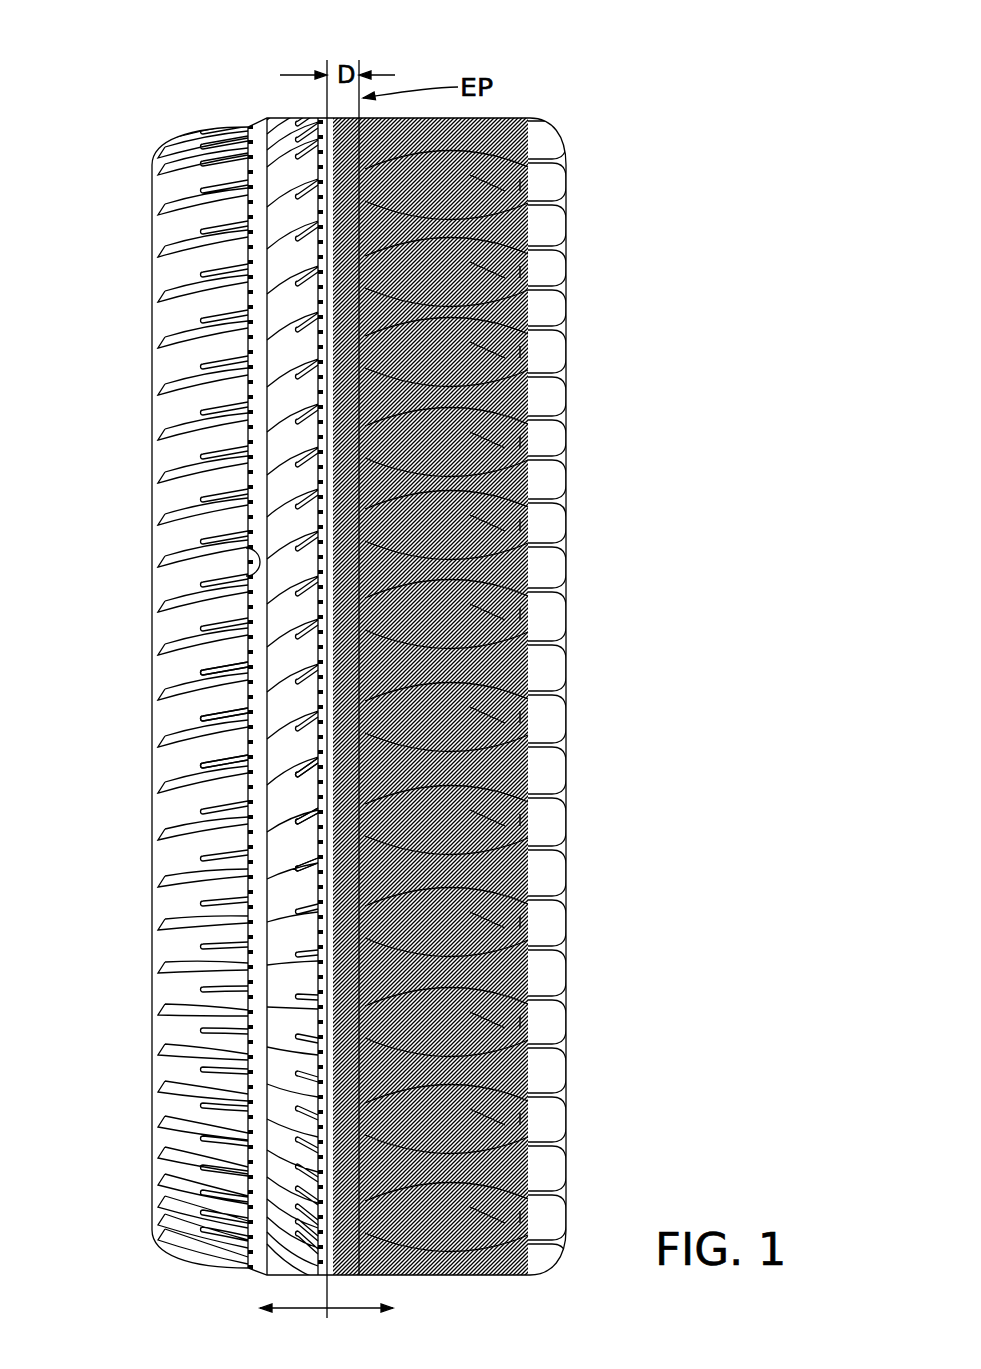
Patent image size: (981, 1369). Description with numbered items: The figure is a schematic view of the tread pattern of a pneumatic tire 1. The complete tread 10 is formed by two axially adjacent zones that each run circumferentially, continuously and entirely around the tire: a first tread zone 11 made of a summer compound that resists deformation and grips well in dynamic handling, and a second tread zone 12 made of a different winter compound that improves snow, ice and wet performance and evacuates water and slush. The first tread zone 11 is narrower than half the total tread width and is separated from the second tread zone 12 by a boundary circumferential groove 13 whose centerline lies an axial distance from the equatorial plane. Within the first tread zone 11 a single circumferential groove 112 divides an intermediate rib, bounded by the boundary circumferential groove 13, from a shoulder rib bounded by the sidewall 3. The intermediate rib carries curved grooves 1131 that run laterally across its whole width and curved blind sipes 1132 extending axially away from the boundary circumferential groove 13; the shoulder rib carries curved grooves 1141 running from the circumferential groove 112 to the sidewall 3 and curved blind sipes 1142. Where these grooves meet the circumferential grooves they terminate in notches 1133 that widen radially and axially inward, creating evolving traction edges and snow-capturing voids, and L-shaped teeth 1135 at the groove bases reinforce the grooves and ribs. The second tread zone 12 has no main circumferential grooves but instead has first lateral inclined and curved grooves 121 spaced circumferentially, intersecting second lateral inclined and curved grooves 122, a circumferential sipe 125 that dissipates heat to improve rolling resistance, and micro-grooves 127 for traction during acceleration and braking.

The tire 1 is at (660, 67).
The sidewall 3 is at (132, 142).
The tread 10 is at (695, 97).
The first tread zone 11 is at (383, 662).
The second tread zone 12 is at (530, 654).
The boundary circumferential groove 13 is at (467, 1113).
The circumferential groove 112 is at (260, 128).
The first lateral inclined and curved grooves 121 is at (457, 477).
The second lateral inclined and curved grooves 122 is at (460, 590).
The circumferential sipe 125 is at (528, 1020).
The micro-grooves 127 is at (500, 830).
The curved grooves 1131 is at (257, 877).
The curved blind sipes 1132 is at (290, 843).
The notches 1133 is at (242, 573).
The L-shaped teeth 1135 is at (318, 467).
The curved grooves 1141 is at (163, 797).
The curved blind sipes 1142 is at (204, 724).